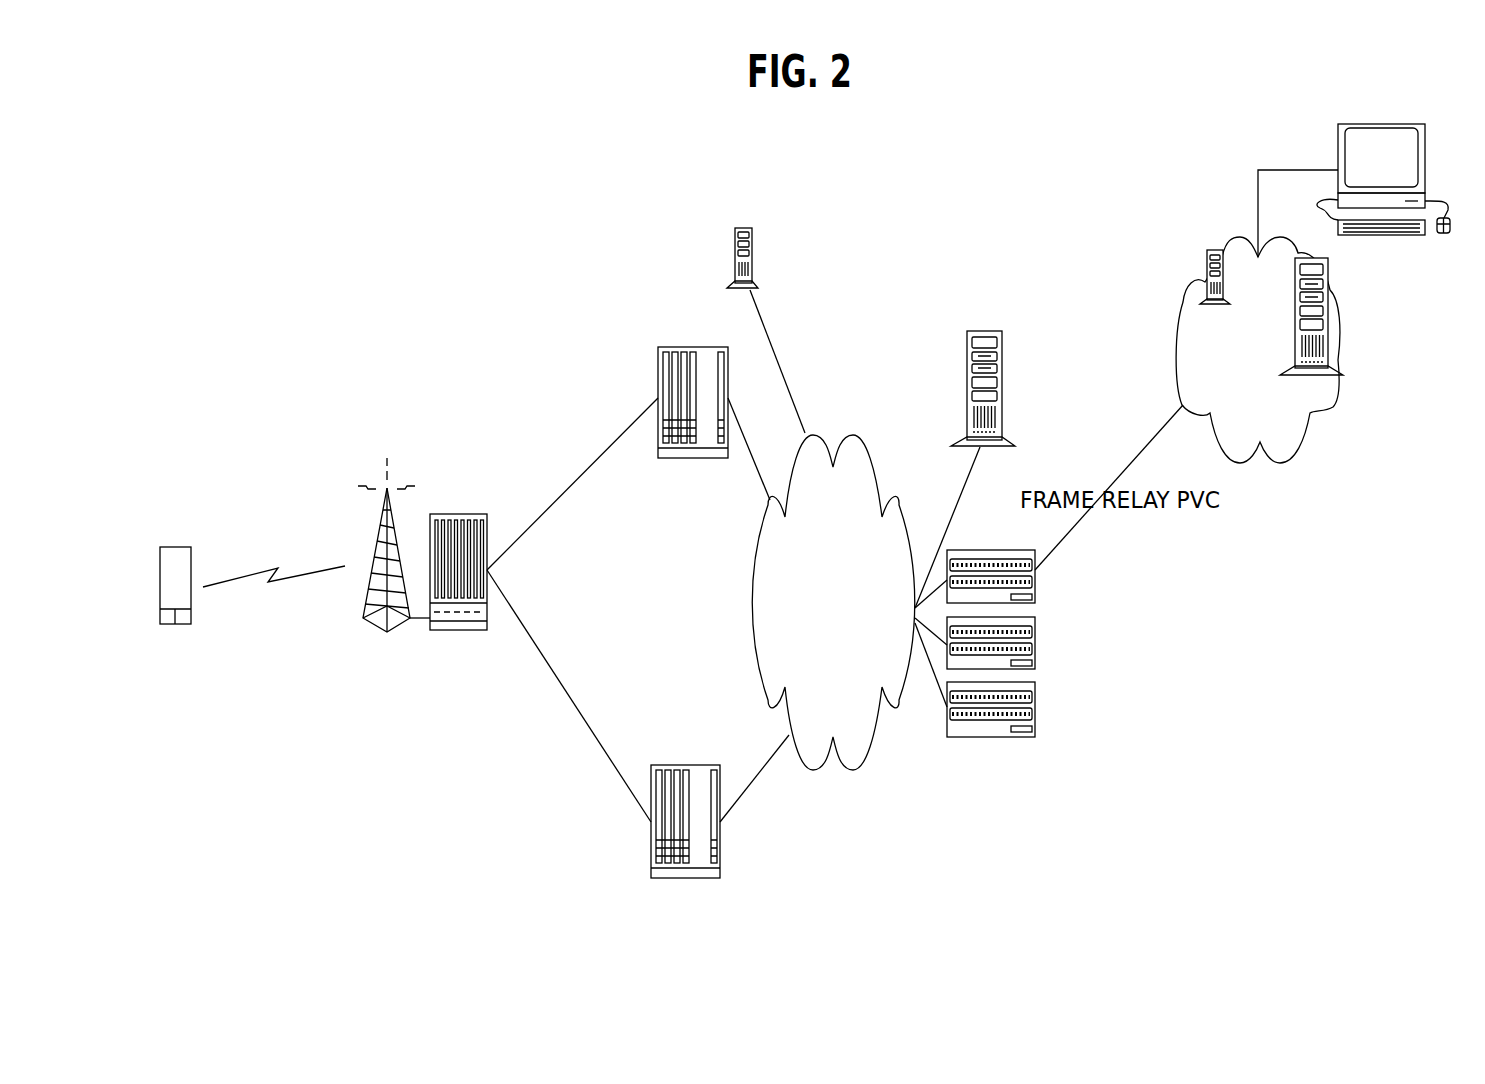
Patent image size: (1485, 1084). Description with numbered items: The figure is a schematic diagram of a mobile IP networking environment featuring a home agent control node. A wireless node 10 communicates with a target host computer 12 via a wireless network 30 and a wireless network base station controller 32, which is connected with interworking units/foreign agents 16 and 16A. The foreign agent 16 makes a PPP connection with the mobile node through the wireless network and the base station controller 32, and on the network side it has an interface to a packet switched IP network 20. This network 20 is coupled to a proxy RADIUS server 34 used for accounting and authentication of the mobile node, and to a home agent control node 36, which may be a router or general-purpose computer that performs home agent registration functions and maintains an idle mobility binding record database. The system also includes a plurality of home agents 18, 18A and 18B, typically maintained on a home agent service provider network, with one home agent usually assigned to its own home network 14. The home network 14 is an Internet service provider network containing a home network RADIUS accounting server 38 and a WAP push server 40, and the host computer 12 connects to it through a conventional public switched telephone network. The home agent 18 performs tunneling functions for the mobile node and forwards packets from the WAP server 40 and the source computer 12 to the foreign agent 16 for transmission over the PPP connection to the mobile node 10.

The wireless node 10 is at (176, 547).
The target host computer 12 is at (1425, 136).
The home network 14 is at (1297, 456).
The interworking unit/foreign agent 16 is at (658, 360).
The interworking unit/foreign agent 16A is at (651, 850).
The home agent 18 is at (1035, 580).
The home agent 18A is at (1035, 647).
The home agent 18B is at (1035, 714).
The packet switched IP network 20 is at (752, 603).
The wireless network 30 is at (368, 578).
The base station controller 32 is at (472, 514).
The proxy RADIUS server 34 is at (735, 256).
The home agent control node 36 is at (1002, 360).
The home network RADIUS accounting server 38 is at (1207, 252).
The WAP push server 40 is at (1330, 330).